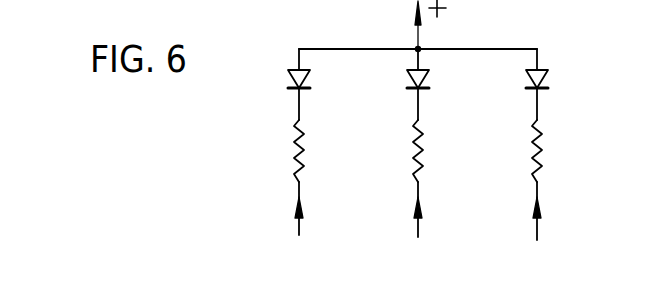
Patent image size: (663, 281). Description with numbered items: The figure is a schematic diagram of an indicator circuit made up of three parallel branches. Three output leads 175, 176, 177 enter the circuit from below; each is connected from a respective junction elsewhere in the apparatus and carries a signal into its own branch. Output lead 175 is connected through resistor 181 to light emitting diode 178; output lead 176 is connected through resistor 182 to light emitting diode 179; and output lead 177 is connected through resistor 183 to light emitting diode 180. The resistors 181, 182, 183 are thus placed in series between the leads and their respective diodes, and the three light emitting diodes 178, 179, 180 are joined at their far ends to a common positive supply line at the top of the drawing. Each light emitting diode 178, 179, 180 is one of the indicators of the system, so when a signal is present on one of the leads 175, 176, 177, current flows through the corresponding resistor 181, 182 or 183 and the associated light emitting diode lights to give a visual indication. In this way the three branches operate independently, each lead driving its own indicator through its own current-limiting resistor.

The output lead 175 is at (293, 197).
The output lead 176 is at (413, 199).
The output lead 177 is at (532, 199).
The light emitting diode 178 is at (291, 79).
The light emitting diode 179 is at (410, 80).
The light emitting diode 180 is at (528, 80).
The resistor 181 is at (306, 148).
The resistor 182 is at (425, 156).
The resistor 183 is at (544, 158).